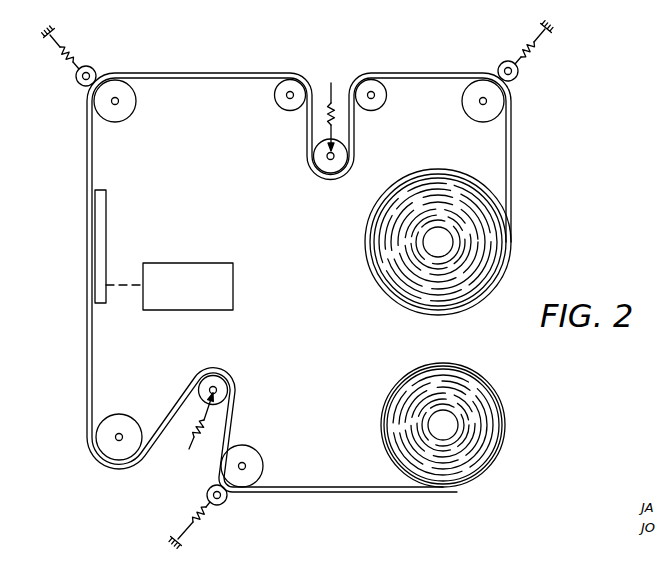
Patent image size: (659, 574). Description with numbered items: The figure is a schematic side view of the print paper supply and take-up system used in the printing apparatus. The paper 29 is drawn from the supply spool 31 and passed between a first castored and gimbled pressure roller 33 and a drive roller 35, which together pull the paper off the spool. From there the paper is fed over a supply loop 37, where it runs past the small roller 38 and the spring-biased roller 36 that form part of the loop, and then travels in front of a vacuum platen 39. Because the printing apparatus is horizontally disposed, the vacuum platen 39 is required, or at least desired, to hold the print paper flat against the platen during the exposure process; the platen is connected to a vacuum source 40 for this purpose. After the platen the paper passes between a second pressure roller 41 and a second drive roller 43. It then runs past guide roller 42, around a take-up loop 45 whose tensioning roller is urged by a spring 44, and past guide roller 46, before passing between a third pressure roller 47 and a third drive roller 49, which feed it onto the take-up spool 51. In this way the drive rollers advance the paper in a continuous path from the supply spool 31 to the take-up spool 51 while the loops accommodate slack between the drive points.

The paper 29 is at (345, 492).
The supply spool 31 is at (502, 438).
The first castored and gimbled pressure roller 33 is at (223, 504).
The drive roller 35 is at (247, 452).
The spring 36 is at (193, 428).
The supply loop 37 is at (210, 375).
The guide roller 38 is at (123, 415).
The vacuum platen 39 is at (101, 219).
The vacuum source 40 is at (194, 265).
The second pressure roller 41 is at (91, 66).
The guide roller 42 is at (279, 98).
The second drive roller 43 is at (137, 104).
The spring 44 is at (333, 102).
The take-up loop 45 is at (316, 158).
The guide roller 46 is at (375, 100).
The third pressure roller 47 is at (501, 65).
The third drive roller 49 is at (473, 110).
The take-up spool 51 is at (370, 231).